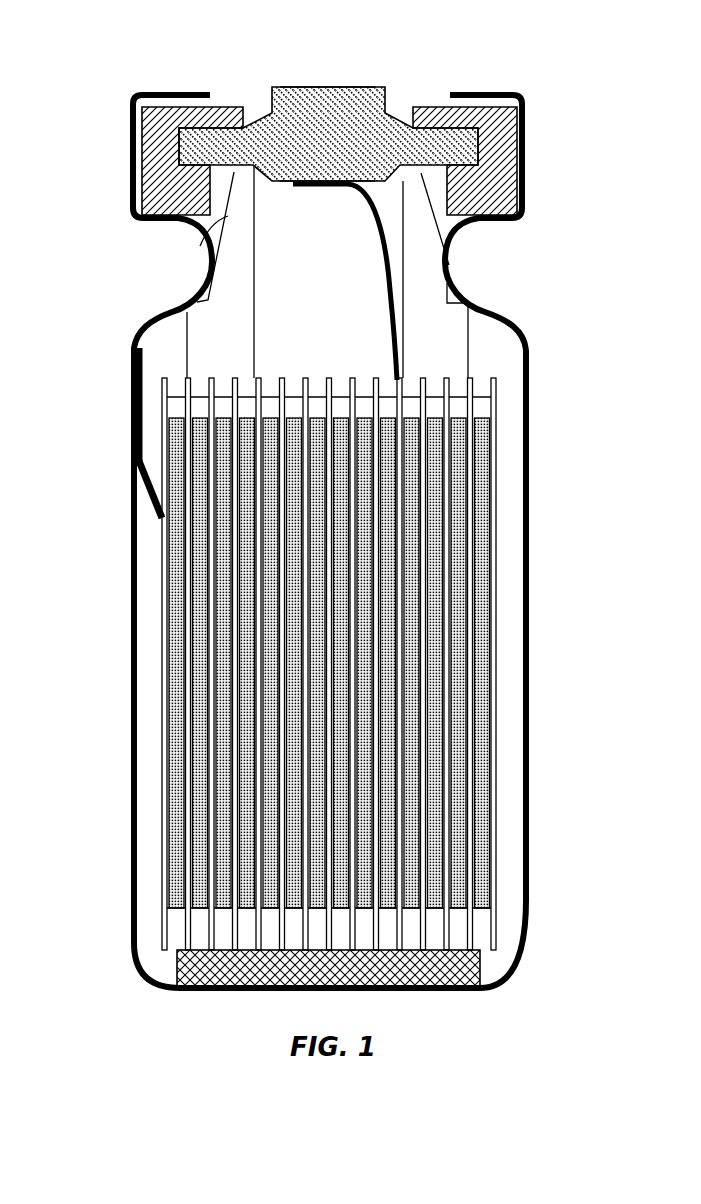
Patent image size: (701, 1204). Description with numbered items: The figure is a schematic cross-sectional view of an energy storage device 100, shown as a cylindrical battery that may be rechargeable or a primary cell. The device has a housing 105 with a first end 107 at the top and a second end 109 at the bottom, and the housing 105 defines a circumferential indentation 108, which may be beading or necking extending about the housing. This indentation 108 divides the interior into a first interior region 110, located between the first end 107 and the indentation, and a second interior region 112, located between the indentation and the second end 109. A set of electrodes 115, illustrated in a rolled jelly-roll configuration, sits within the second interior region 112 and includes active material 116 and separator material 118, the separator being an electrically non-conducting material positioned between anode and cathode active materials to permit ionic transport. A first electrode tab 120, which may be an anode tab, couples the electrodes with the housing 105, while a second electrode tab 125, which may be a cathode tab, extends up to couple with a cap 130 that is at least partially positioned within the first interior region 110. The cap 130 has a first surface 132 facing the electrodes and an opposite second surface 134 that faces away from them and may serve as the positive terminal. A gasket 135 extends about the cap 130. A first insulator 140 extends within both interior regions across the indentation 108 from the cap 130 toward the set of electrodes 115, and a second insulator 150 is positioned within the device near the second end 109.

The energy storage device 100 is at (93, 84).
The housing 105 is at (530, 580).
The first end 107 is at (512, 94).
The circumferential indentation 108 is at (454, 278).
The second end 109 is at (487, 991).
The first interior region 110 is at (530, 143).
The second interior region 112 is at (530, 840).
The set of electrodes 115 is at (497, 508).
The active material 116 is at (491, 462).
The separator material 118 is at (497, 408).
The first electrode tab 120 is at (135, 496).
The second electrode tab 125 is at (394, 293).
The cap 130 is at (358, 86).
The first surface 132 is at (288, 184).
The second surface 134 is at (292, 86).
The gasket 135 is at (128, 162).
The first insulator 140 is at (207, 233).
The second insulator 150 is at (481, 975).